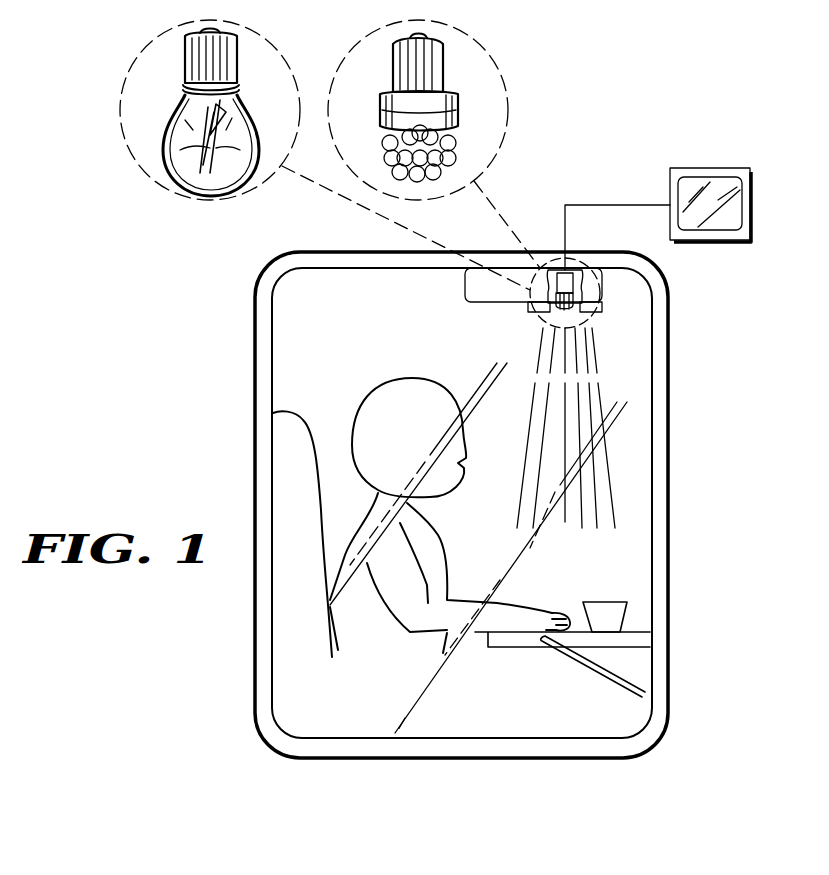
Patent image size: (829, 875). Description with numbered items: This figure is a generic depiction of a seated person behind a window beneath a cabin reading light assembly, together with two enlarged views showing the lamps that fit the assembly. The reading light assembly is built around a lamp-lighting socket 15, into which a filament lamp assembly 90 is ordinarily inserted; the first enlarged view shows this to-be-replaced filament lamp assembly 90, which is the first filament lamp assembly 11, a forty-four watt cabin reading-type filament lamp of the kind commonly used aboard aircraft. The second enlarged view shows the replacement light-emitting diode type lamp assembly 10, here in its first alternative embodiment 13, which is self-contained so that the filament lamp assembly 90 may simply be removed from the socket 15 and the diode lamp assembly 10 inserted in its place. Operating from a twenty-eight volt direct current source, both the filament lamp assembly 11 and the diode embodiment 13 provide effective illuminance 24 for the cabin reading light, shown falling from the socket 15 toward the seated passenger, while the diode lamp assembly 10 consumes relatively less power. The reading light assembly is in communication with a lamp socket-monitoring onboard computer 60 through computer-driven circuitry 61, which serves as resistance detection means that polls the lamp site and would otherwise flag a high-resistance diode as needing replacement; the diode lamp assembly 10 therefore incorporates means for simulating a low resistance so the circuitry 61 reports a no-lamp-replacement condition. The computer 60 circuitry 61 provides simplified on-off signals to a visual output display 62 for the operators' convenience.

The filament lamp assembly 90 is at (238, 77).
The first filament lamp assembly 11 is at (211, 113).
The replacement light-emitting diode type lamp assembly 10 is at (458, 117).
The first alternative embodiment of the diode lamp assembly 13 is at (419, 108).
The lamp-lighting socket 15 is at (567, 280).
The illuminance 24 is at (588, 408).
The onboard computer 60 is at (753, 203).
The circuitry 61 is at (612, 205).
The visual output display 62 is at (718, 208).